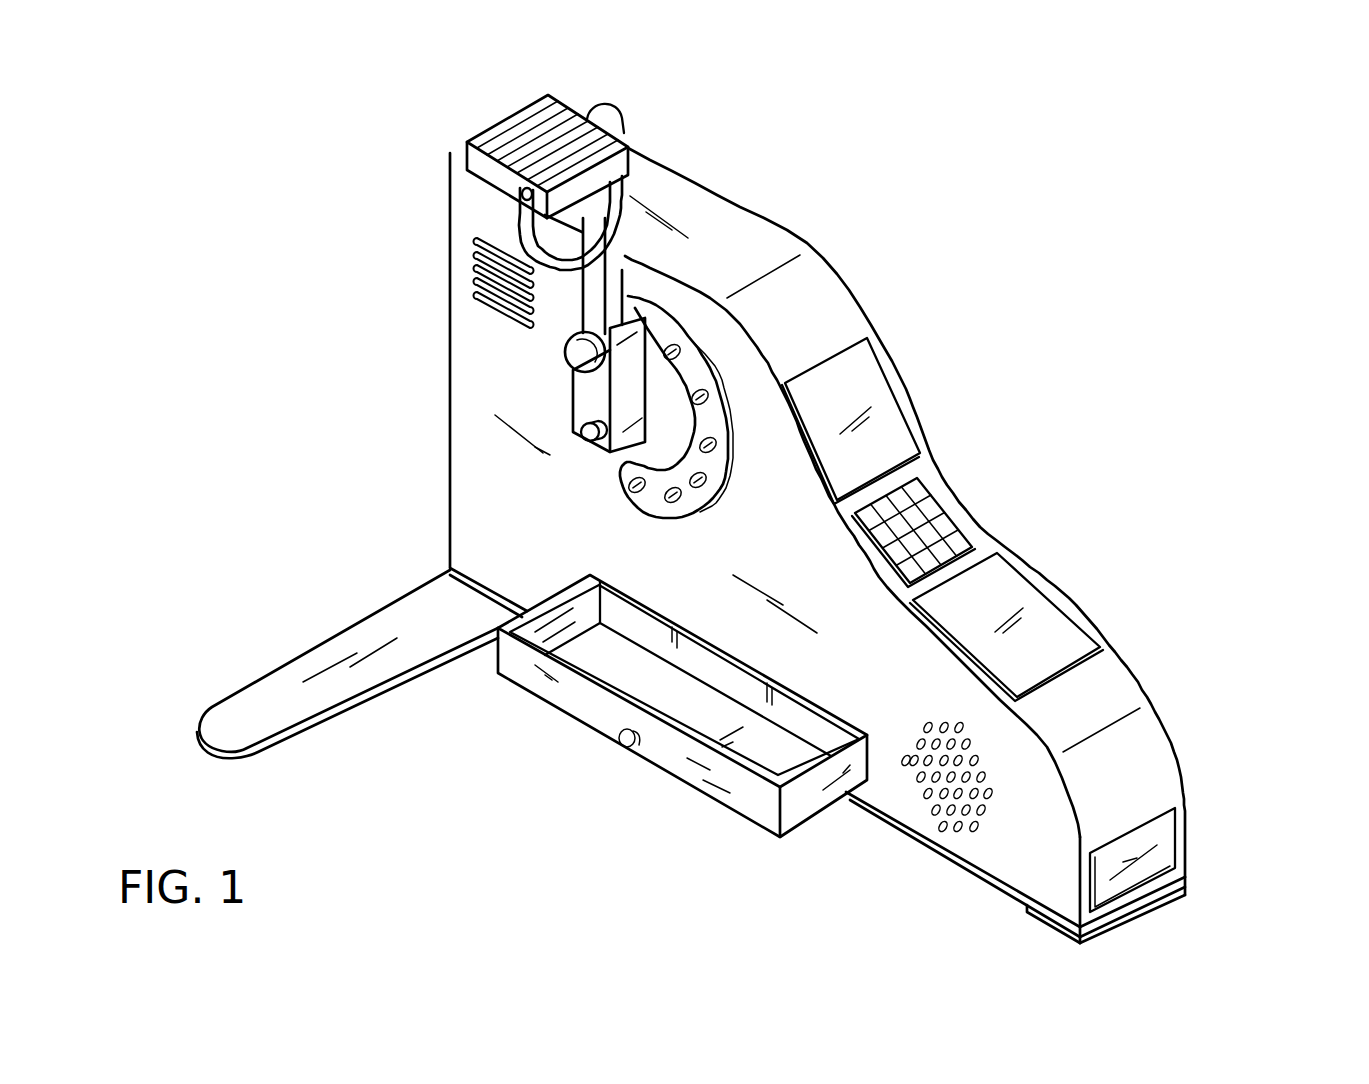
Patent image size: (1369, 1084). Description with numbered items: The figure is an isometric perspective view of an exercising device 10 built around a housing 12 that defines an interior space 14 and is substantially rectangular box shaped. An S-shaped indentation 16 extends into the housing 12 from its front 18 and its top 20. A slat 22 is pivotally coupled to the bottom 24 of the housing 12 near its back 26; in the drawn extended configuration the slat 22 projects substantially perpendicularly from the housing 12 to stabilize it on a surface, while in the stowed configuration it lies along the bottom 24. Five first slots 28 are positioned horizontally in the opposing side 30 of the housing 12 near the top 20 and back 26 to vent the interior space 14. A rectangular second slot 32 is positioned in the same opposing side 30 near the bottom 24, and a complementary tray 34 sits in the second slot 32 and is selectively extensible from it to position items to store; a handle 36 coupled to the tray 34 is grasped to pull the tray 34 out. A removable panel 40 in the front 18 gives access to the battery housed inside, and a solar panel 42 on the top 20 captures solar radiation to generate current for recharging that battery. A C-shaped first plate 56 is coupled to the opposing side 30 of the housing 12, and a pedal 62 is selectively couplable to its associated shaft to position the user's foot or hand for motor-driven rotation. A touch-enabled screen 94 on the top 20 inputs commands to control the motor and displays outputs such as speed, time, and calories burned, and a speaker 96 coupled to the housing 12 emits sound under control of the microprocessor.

The exercising device 10 is at (939, 512).
The housing 12 is at (812, 482).
The interior space 14 is at (815, 246).
The indentation 16 is at (1145, 439).
The front 18 is at (1155, 808).
The top 20 is at (710, 167).
The slat 22 is at (317, 664).
The bottom 24 is at (817, 768).
The back 26 is at (371, 360).
The first slot 28 is at (397, 283).
The opposing side 30 is at (558, 521).
The second slot 32 is at (648, 685).
The tray 34 is at (682, 735).
The handle 36 is at (626, 754).
The panel 40 is at (1187, 835).
The solar panel 42 is at (974, 524).
The first plate 56 is at (804, 384).
The pedal 62 is at (584, 244).
The screen 94 is at (1016, 519).
The speaker 96 is at (927, 781).